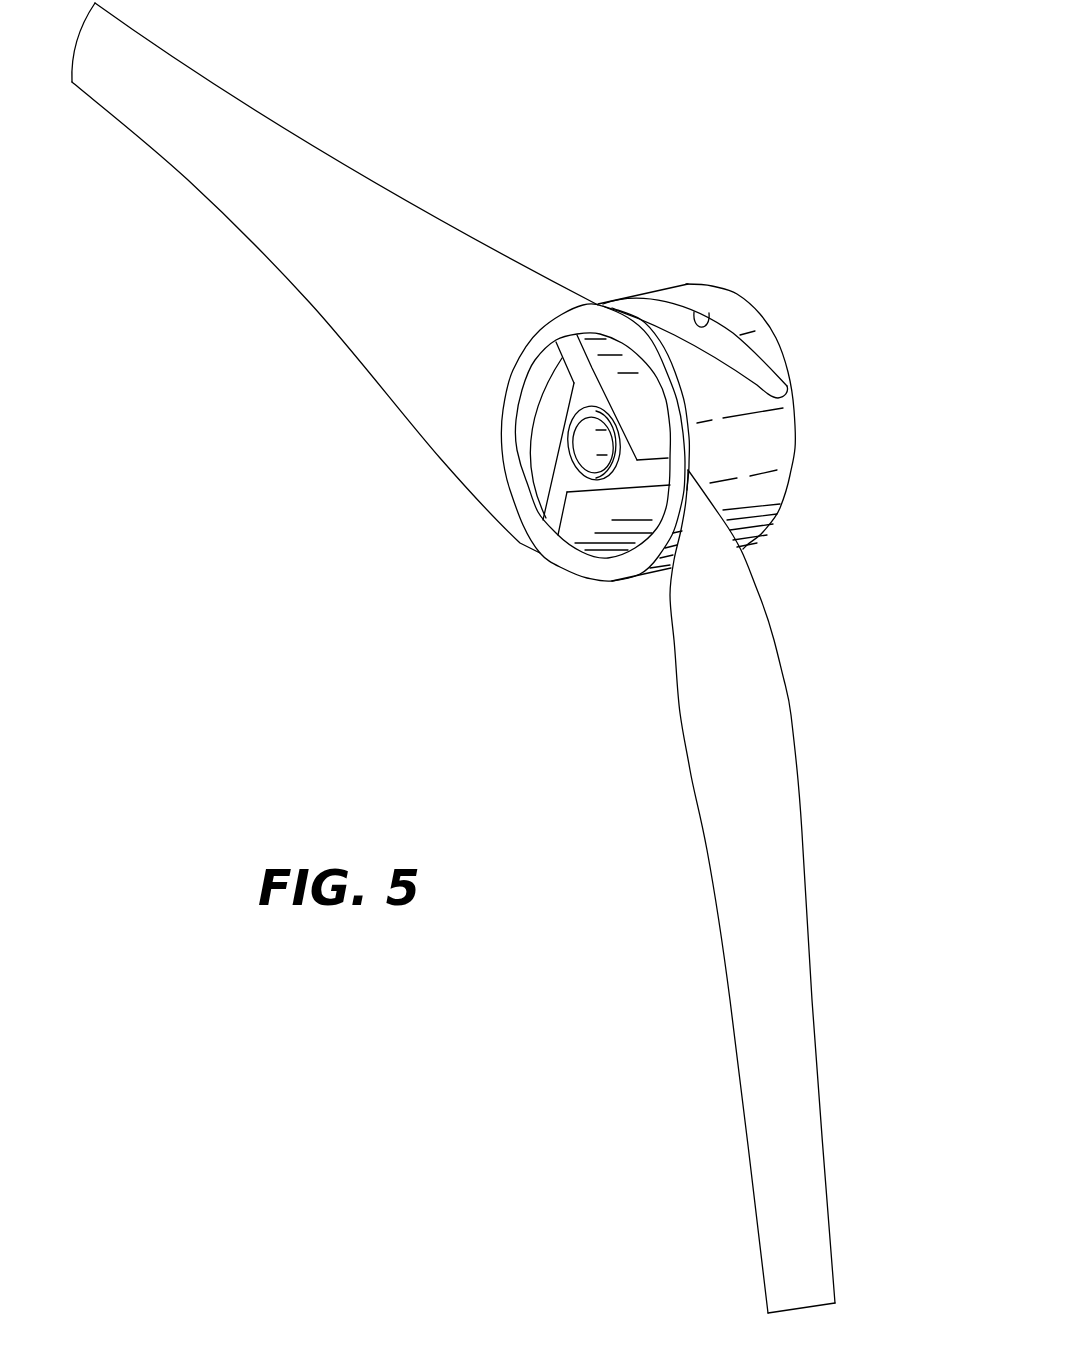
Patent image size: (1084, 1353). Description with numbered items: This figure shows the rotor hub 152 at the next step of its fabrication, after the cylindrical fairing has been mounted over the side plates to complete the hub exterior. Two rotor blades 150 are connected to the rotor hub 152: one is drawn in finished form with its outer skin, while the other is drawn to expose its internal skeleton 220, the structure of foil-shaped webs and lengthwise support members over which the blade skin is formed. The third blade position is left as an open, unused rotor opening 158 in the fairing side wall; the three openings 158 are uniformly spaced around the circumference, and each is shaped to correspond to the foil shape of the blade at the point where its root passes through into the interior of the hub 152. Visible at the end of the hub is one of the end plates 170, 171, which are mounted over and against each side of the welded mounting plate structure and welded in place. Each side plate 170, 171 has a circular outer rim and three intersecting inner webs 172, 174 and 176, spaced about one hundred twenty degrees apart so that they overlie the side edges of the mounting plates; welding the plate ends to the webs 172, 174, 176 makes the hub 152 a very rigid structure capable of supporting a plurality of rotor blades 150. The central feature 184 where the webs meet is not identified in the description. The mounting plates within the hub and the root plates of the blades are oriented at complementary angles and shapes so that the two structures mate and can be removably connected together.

The rotor blade 150 is at (385, 226).
The rotor hub 152 is at (803, 478).
The opening 158 is at (709, 312).
The end plate 170 is at (768, 388).
The end plate 171 is at (560, 560).
The inner web 172 is at (640, 475).
The inner web 174 is at (568, 338).
The inner web 176 is at (550, 523).
The bore 184 is at (573, 462).
The internal skeleton structure 220 is at (746, 674).